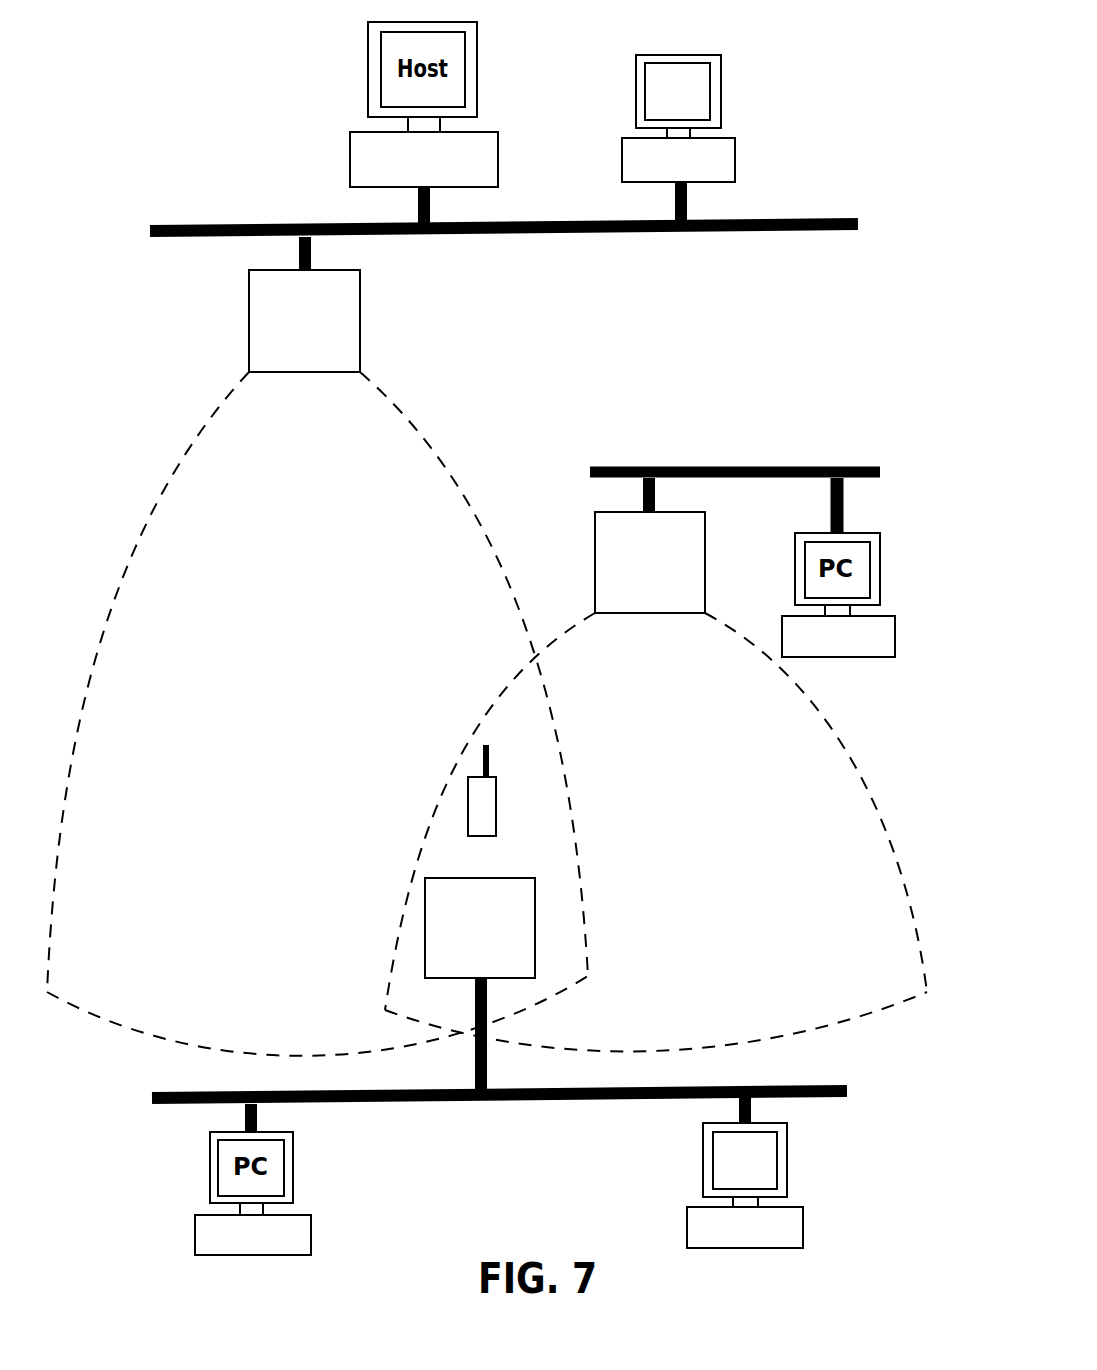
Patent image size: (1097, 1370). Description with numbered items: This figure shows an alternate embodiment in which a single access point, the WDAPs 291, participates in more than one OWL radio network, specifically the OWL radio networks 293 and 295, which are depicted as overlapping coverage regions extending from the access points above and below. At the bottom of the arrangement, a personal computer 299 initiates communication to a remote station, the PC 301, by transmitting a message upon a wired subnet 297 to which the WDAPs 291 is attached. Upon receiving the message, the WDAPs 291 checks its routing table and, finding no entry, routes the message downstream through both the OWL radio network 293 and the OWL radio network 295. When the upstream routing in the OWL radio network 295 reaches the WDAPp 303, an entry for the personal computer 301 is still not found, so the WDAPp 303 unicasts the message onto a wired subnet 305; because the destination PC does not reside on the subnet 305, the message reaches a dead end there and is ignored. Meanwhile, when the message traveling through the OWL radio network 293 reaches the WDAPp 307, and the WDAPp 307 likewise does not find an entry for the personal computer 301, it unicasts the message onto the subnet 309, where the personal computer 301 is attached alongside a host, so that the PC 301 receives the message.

The WDAPs 291 is at (535, 930).
The OWL radio network 293 is at (147, 523).
The OWL radio network 295 is at (868, 788).
The wired subnet 297 is at (580, 1100).
The personal computer 299 is at (787, 1153).
The PC 301 is at (721, 96).
The WDAPp 303 is at (595, 542).
The wired subnet 305 is at (720, 467).
The WDAPp 307 is at (249, 307).
The wireless subnet 309 is at (255, 225).